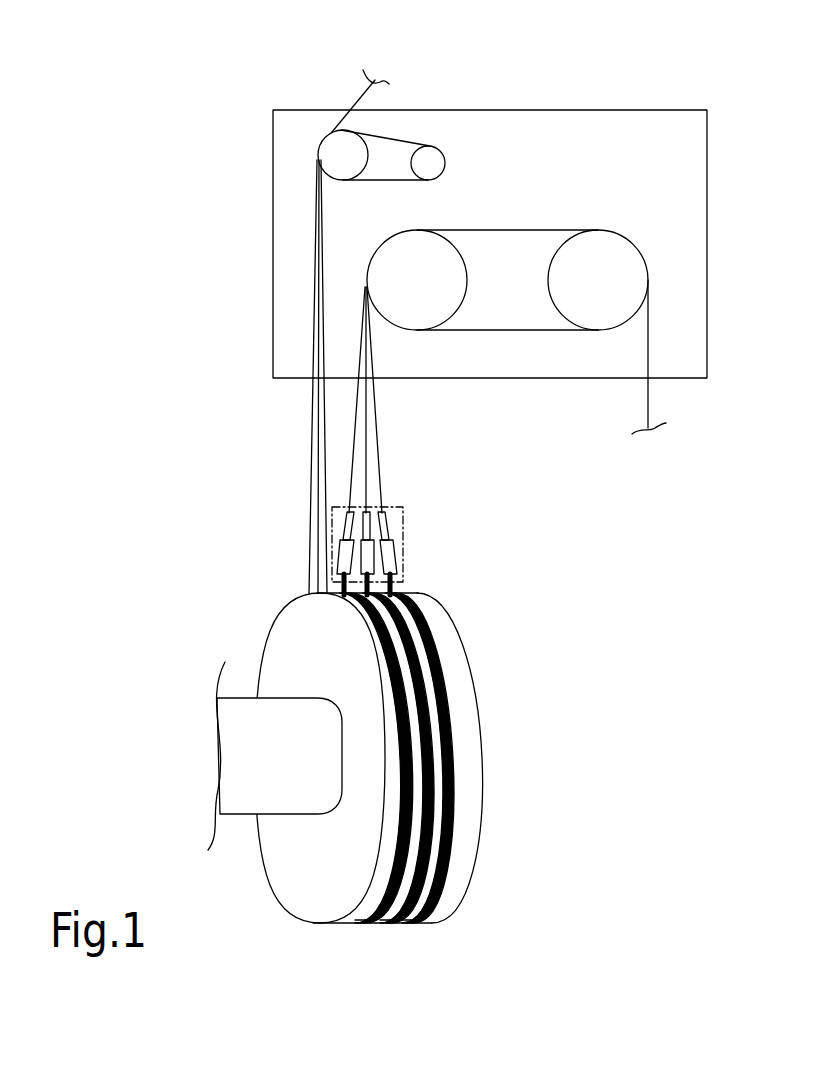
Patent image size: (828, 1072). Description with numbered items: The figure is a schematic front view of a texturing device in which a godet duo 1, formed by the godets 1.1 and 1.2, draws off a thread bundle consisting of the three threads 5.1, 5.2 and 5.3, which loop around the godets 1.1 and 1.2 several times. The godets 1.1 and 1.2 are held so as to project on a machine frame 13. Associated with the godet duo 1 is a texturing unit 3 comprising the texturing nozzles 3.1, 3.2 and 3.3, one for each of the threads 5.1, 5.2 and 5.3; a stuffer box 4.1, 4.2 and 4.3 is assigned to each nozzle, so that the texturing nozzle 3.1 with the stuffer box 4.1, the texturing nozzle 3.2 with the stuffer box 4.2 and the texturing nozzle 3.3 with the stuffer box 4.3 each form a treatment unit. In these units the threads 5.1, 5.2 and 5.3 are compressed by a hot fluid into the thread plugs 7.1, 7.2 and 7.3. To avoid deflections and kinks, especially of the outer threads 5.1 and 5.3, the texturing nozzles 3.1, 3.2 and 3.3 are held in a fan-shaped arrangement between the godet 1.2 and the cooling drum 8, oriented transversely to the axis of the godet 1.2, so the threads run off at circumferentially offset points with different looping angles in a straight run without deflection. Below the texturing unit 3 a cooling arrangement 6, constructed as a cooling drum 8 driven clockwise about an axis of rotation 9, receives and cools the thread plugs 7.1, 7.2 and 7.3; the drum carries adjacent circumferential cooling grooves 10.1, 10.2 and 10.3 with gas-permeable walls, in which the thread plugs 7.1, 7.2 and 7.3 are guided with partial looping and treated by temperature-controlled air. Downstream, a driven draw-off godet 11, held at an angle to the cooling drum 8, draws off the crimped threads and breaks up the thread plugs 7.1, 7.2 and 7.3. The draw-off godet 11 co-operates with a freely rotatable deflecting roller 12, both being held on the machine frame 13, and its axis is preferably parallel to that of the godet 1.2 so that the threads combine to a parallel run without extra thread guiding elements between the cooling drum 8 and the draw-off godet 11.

The godet duo 1 is at (542, 195).
The godet 1.1 is at (610, 257).
The godet 1.2 is at (432, 257).
The texturing unit 3 is at (403, 543).
The texturing nozzle 3.1 is at (347, 517).
The texturing nozzle 3.2 is at (365, 515).
The texturing nozzle 3.3 is at (387, 527).
The stuffer box 4.1 is at (345, 560).
The stuffer box 4.2 is at (370, 550).
The stuffer box 4.3 is at (397, 560).
The thread 5.1 is at (352, 487).
The thread 5.2 is at (365, 445).
The thread 5.3 is at (373, 405).
The cooling arrangement 6 is at (487, 797).
The thread plug 7.1 is at (403, 673).
The thread plug 7.2 is at (427, 720).
The thread plug 7.3 is at (458, 767).
The cooling drum 8 is at (462, 848).
The axis of rotation 9 is at (255, 743).
The cooling groove 10.1 is at (343, 925).
The cooling groove 10.2 is at (373, 925).
The cooling groove 10.3 is at (398, 925).
The draw-off godet 11 is at (342, 148).
The deflecting roller 12 is at (427, 158).
The machine frame 13 is at (288, 155).